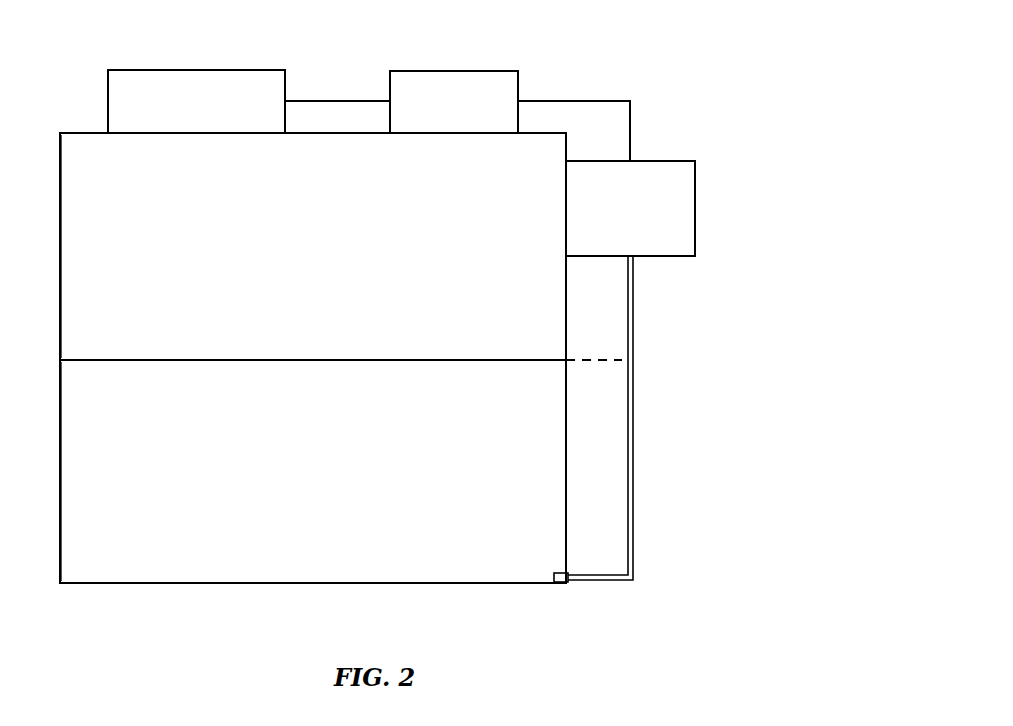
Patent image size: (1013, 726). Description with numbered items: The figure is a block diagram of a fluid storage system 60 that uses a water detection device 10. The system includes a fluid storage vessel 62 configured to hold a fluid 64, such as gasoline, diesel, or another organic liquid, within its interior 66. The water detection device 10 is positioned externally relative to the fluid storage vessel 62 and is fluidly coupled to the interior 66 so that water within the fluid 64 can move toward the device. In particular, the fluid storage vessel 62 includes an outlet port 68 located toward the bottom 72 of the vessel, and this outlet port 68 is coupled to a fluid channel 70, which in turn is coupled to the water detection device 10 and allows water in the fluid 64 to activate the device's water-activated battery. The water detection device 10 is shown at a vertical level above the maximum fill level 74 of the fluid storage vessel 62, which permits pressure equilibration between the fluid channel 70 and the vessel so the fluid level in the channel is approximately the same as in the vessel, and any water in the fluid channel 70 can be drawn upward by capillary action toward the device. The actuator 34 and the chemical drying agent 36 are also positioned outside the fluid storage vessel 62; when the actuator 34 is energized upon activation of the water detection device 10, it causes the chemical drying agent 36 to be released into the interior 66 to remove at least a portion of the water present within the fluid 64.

The fluid storage system 60 is at (616, 46).
The chemical drying agent 36 is at (197, 70).
The actuator 34 is at (455, 71).
The water detection device 10 is at (695, 206).
The interior 66 is at (77, 319).
The fluid 64 is at (73, 405).
The bottom 72 is at (58, 577).
The fluid storage vessel 62 is at (313, 585).
The outlet port 68 is at (562, 583).
The maximum fill level 74 is at (603, 360).
The fluid channel 70 is at (633, 413).